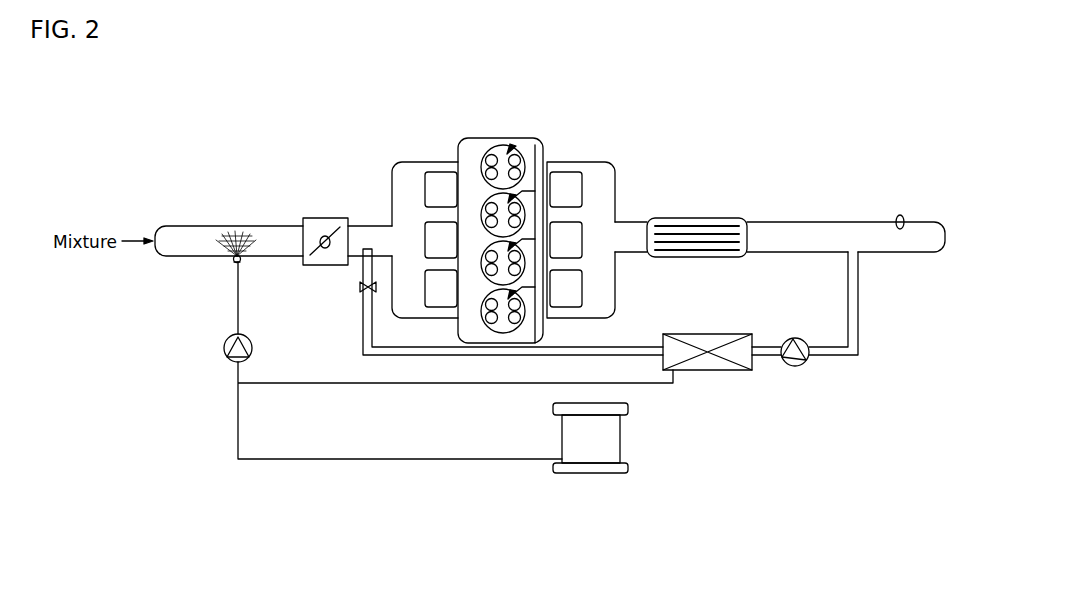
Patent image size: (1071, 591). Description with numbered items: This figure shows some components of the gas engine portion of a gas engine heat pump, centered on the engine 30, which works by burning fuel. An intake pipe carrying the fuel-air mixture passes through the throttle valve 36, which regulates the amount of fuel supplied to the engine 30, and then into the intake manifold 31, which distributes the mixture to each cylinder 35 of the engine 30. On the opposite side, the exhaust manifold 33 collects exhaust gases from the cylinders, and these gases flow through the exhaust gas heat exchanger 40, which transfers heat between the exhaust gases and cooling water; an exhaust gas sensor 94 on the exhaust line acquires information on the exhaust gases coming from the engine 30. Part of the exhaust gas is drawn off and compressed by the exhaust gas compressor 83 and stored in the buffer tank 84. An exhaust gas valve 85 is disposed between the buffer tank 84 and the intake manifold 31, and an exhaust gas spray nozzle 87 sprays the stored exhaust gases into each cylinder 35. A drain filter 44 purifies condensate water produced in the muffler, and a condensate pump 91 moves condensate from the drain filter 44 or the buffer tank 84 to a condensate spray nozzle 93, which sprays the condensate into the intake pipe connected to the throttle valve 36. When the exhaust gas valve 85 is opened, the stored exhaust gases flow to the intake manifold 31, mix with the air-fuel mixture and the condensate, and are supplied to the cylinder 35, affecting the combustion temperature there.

The engine 30 is at (490, 137).
The intake manifold 31 is at (411, 161).
The exhaust manifold 33 is at (598, 161).
The cylinder 35 is at (481, 148).
The throttle valve 36 is at (335, 218).
The exhaust gas heat exchanger 40 is at (707, 217).
The drain filter 44 is at (602, 475).
The exhaust gas compressor 83 is at (795, 364).
The buffer tank 84 is at (725, 371).
The exhaust gas valve 85 is at (358, 286).
The exhaust gas spray nozzle 87 is at (512, 146).
The condensate pump 91 is at (225, 351).
The condensate spray nozzle 93 is at (234, 264).
The exhaust gas sensor 94 is at (898, 217).